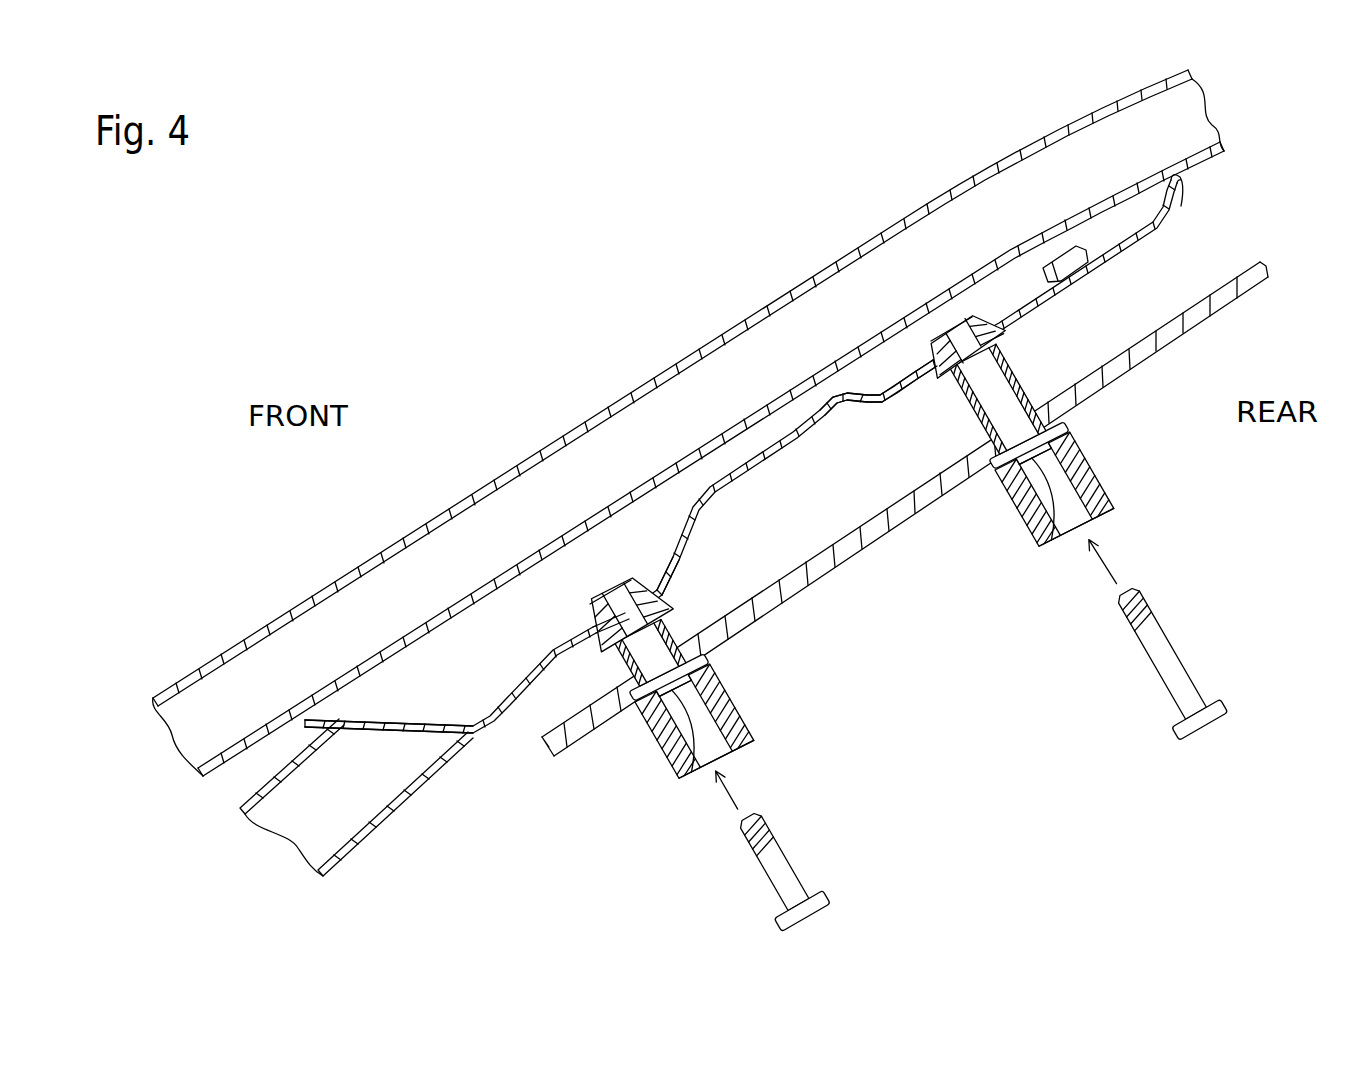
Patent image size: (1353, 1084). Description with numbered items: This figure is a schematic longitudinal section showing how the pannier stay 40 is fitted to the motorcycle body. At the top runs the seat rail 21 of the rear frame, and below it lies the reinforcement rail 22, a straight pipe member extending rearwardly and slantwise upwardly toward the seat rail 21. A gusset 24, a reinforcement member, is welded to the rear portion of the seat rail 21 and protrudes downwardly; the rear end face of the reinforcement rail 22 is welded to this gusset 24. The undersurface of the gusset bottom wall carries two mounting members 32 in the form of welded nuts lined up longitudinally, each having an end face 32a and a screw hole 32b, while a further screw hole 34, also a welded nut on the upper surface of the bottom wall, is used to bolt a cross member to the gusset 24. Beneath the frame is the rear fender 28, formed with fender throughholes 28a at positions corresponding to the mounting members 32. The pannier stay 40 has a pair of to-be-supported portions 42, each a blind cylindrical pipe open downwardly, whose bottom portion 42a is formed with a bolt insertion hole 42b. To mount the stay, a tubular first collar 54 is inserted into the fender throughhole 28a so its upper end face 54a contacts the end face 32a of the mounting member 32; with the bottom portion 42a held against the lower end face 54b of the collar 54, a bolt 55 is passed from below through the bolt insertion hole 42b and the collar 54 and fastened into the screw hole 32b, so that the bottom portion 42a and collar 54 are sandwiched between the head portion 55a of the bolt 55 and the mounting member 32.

The seat rail 21 is at (294, 606).
The reinforcement rail 22 is at (356, 847).
The gusset 24 is at (787, 440).
The rear fender 28 is at (1241, 296).
The fender throughhole 28a is at (585, 680).
The mounting member 32 is at (640, 580).
The end face of the mounting member 32a is at (672, 622).
The screw hole of the mounting member 32b is at (612, 578).
The screw hole 34 is at (1082, 272).
The pannier stay 40 is at (865, 525).
The to-be-supported portion 42 is at (685, 778).
The bottom portion 42a is at (652, 723).
The bolt insertion hole 42b is at (740, 756).
The first collar 54 is at (617, 662).
The upper end face of the collar 54a is at (597, 628).
The lower end face of the collar 54b is at (710, 680).
The bolt 55 is at (977, 733).
The head portion of the bolt 55a is at (823, 913).